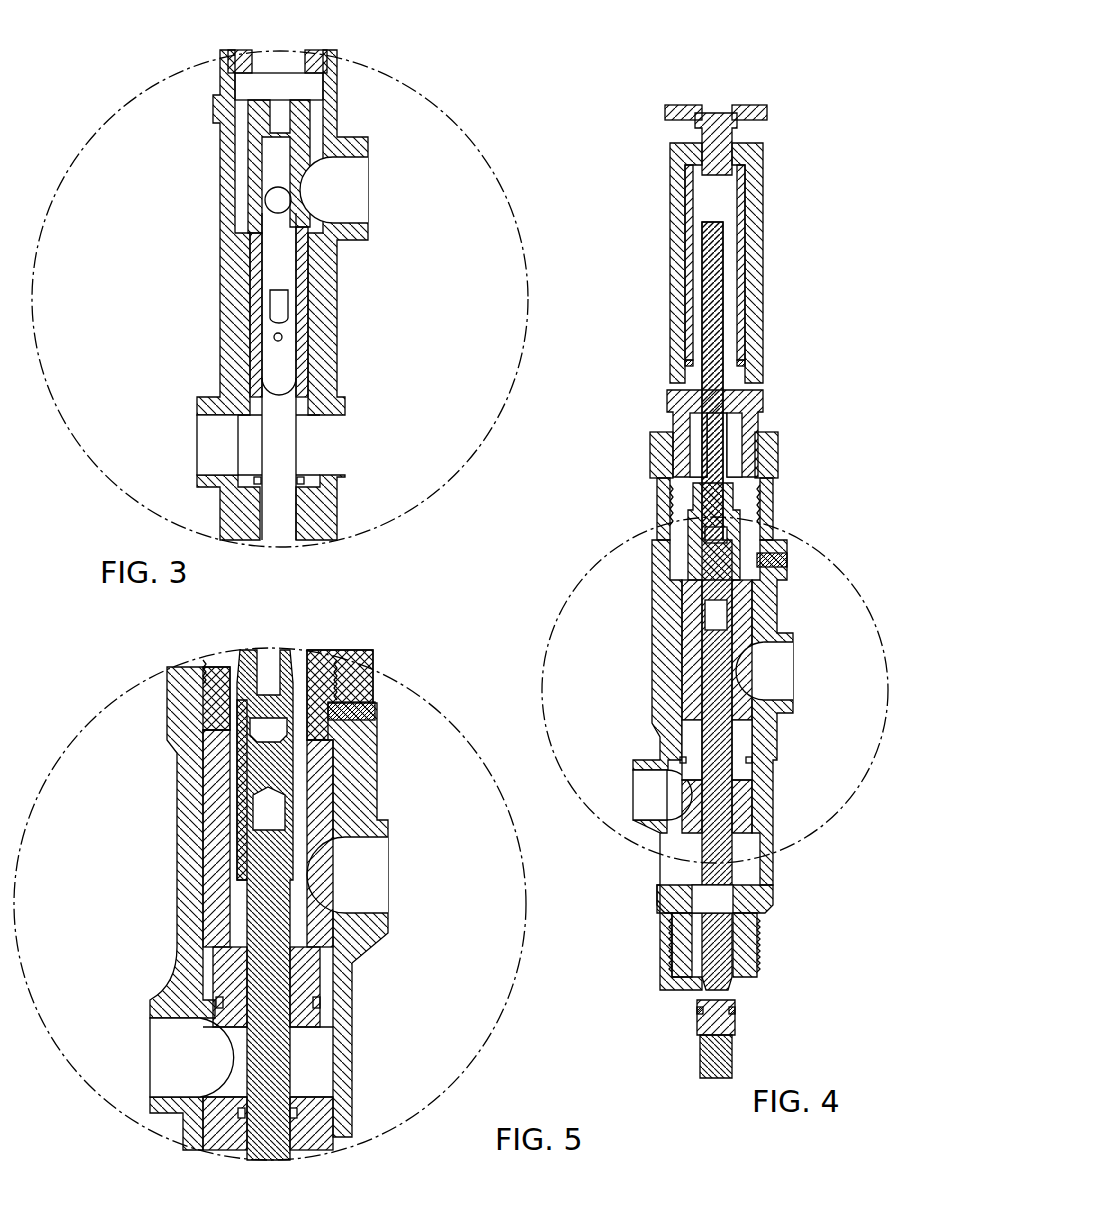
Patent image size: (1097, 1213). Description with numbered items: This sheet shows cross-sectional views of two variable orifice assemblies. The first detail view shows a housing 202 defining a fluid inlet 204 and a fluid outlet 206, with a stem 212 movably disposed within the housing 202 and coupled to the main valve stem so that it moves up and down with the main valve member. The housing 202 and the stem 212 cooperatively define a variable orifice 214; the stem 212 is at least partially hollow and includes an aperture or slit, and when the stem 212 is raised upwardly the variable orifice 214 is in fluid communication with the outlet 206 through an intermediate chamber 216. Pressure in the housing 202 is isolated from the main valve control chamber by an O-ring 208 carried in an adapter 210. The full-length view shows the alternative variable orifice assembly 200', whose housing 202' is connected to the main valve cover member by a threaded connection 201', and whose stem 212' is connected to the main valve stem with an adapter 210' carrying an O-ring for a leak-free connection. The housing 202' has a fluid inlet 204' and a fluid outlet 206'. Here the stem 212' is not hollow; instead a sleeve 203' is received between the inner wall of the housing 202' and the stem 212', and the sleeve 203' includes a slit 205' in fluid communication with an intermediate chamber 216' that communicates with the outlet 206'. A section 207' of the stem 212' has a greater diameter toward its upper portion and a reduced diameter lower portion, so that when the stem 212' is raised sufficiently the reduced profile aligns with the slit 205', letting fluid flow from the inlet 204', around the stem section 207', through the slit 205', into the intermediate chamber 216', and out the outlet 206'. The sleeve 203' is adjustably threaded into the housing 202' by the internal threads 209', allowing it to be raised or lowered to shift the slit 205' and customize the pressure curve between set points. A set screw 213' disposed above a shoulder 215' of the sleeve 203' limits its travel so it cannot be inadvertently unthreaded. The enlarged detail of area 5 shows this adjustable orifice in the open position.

In FIG. 4, the alternative variable orifice assembly 200' is at (830, 274).
In FIG. 4, the threaded connection 201' is at (758, 995).
In FIG. 3, the housing 202 is at (249, 295).
In FIG. 4, the housing 202' is at (690, 765).
In FIG. 5, the housing 202' is at (237, 900).
In FIG. 4, the sleeve 203' is at (756, 448).
In FIG. 5, the sleeve 203' is at (216, 686).
In FIG. 3, the fluid inlet 204 is at (211, 445).
In FIG. 4, the fluid inlet 204' is at (630, 774).
In FIG. 5, the fluid inlet 204' is at (155, 1055).
In FIG. 5, the slit 205' is at (217, 1013).
In FIG. 3, the fluid outlet 206 is at (379, 190).
In FIG. 4, the fluid outlet 206' is at (801, 671).
In FIG. 5, the fluid outlet 206' is at (386, 875).
In FIG. 5, the stem section 207' is at (374, 740).
In FIG. 4, the O-ring 208 is at (752, 822).
In FIG. 4, the internal threads 209' is at (780, 509).
In FIG. 4, the adapter 210 is at (755, 889).
In FIG. 4, the adapter 210' is at (714, 531).
In FIG. 3, the stem 212 is at (345, 363).
In FIG. 4, the stem 212' is at (664, 606).
In FIG. 5, the stem 212' is at (198, 905).
In FIG. 5, the set screw 213' is at (380, 695).
In FIG. 3, the variable orifice 214 is at (253, 163).
In FIG. 5, the shoulder 215' is at (344, 790).
In FIG. 3, the intermediate chamber 216 is at (220, 105).
In FIG. 5, the intermediate chamber 216' is at (220, 838).
In FIG. 4, the area 5 is at (872, 770).